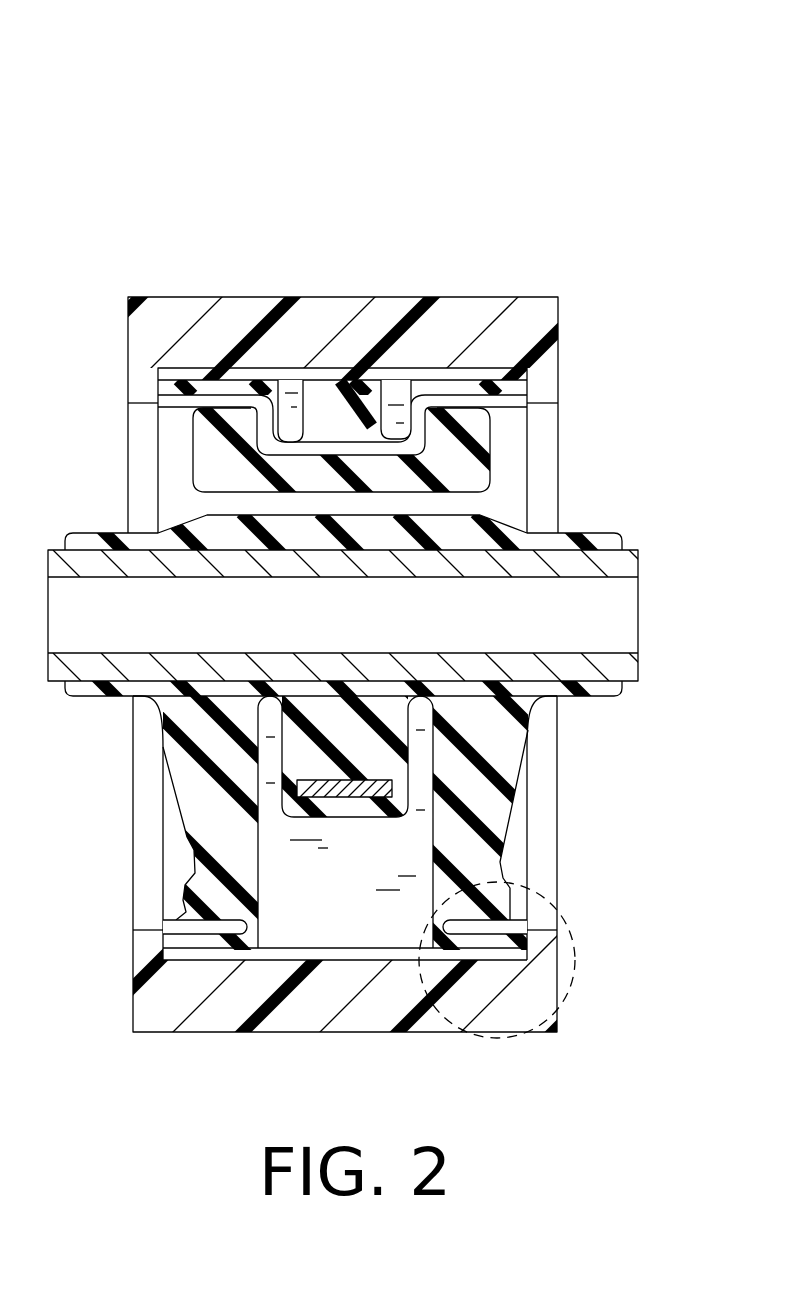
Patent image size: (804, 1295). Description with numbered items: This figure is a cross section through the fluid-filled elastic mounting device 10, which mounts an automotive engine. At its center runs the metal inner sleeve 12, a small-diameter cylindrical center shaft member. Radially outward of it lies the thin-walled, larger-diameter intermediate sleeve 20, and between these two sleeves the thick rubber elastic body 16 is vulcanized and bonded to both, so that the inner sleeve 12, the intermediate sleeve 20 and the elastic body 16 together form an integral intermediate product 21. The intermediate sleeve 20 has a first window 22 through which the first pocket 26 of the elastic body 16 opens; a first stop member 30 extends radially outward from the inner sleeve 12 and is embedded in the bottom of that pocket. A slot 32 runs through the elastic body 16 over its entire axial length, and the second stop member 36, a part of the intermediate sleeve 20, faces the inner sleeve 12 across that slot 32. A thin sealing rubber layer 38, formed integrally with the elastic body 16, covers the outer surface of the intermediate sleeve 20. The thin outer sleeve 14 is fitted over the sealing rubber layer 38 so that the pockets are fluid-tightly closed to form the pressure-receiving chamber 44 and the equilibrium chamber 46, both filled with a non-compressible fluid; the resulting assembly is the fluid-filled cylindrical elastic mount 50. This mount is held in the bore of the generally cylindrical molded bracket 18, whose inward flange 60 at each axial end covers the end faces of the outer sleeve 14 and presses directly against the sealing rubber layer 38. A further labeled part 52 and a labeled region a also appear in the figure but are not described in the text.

The fluid-filled elastic mounting device 10 is at (143, 140).
The inner sleeve 12 is at (92, 540).
The outer sleeve 14 is at (480, 372).
The elastic body 16 is at (227, 772).
The bracket 18 is at (142, 275).
The intermediate sleeve 20 is at (195, 933).
The integral intermediate product 21 is at (540, 815).
The first window 22 is at (246, 932).
The first pocket 26 is at (250, 848).
The first stop member 30 is at (355, 790).
The slot 32 is at (420, 500).
The second stop member 36 is at (330, 447).
The sealing rubber layer 38 is at (232, 388).
The pressure-receiving chamber 44 is at (323, 910).
The equilibrium chamber 46 is at (395, 392).
The fluid-filled cylindrical elastic mount 50 is at (270, 350).
The housing top wall 52 is at (460, 310).
The inward flange 60 is at (547, 383).
The detail region a is at (568, 862).